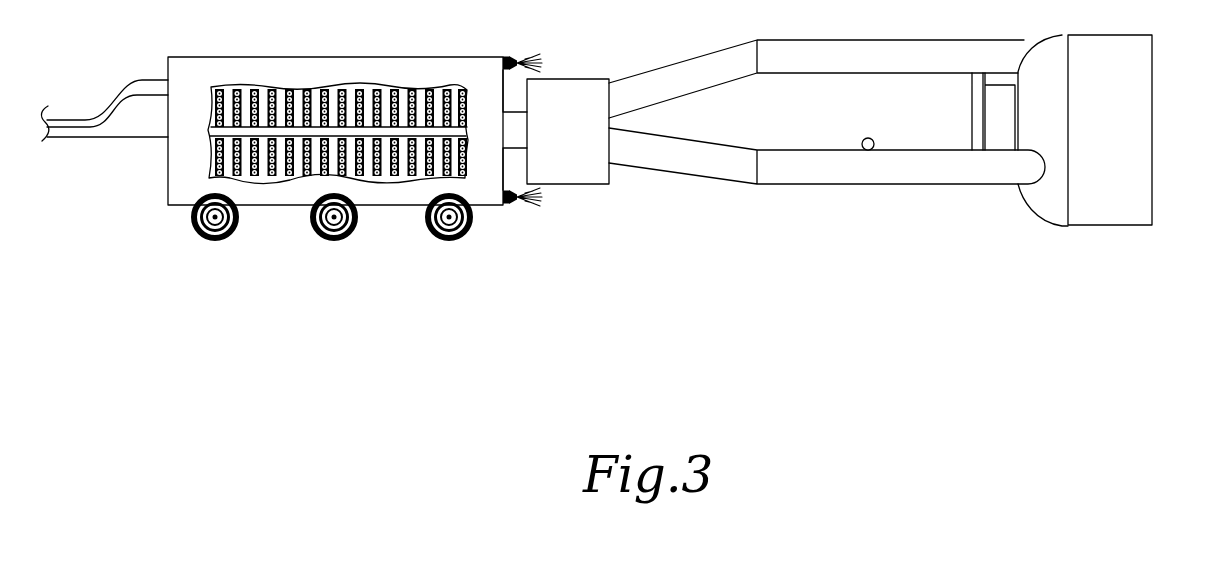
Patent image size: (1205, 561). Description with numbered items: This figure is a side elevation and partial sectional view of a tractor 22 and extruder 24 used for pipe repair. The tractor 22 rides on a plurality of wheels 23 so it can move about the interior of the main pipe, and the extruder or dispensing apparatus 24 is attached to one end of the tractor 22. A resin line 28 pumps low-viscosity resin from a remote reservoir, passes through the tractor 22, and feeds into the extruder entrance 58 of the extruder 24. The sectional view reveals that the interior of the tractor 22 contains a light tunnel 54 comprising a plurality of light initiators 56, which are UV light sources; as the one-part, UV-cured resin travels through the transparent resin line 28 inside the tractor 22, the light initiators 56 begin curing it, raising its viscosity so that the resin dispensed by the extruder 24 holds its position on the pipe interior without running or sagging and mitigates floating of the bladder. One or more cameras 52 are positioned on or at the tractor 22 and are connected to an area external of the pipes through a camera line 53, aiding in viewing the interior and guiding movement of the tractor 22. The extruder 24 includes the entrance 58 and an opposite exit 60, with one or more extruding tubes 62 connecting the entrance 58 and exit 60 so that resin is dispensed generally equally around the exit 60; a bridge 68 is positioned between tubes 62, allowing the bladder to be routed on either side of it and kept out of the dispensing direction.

The tractor 22 is at (211, 52).
The wheels 23 is at (204, 236).
The extruder 24 is at (949, 34).
The resin line 28 is at (106, 140).
The cameras 52 is at (520, 58).
The camera line 53 is at (107, 100).
The light tunnel 54 is at (340, 150).
The light initiators 56 is at (347, 100).
The extruder entrance 58 is at (595, 185).
The extruder exit 60 is at (1138, 226).
The extruder tubes 62 is at (858, 186).
The bridge 68 is at (864, 139).